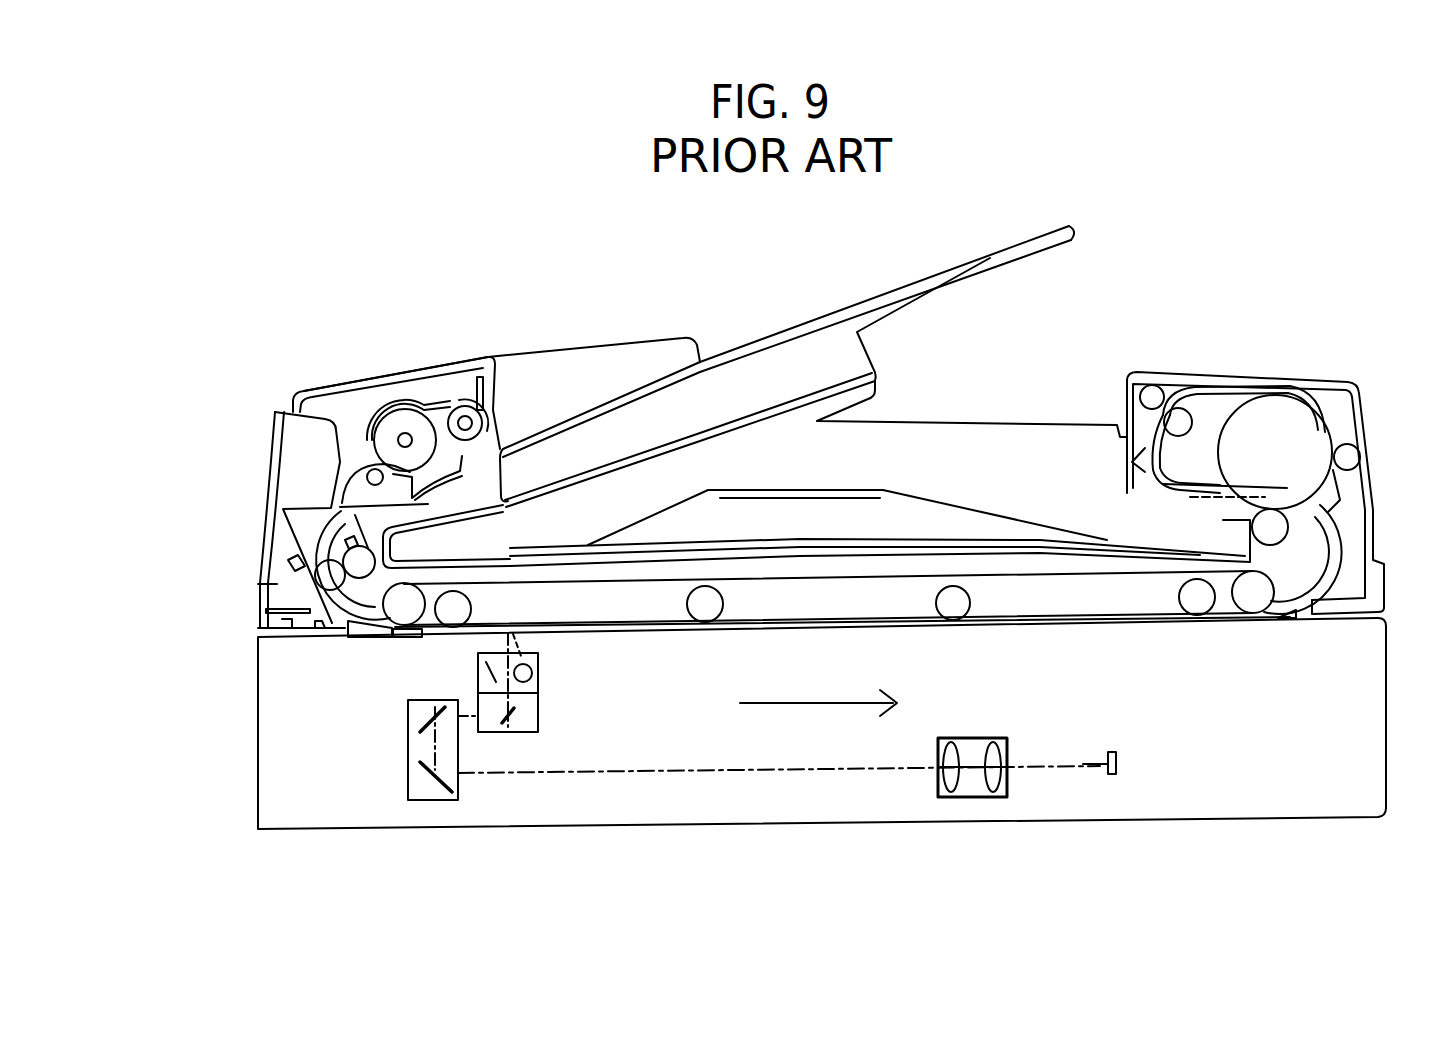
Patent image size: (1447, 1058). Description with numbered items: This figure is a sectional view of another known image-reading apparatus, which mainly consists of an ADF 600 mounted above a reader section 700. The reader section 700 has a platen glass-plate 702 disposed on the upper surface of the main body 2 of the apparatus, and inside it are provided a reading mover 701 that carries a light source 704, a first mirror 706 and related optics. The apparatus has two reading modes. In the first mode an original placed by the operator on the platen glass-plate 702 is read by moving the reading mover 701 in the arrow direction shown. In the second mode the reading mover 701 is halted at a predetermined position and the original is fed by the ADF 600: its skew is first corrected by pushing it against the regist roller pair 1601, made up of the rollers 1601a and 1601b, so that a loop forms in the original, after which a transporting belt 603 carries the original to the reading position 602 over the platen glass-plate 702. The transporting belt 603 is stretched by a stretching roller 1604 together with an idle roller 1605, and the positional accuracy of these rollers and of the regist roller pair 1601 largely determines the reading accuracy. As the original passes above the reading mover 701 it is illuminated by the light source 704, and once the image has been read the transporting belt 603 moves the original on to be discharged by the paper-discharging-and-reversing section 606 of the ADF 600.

The main body 2 is at (845, 767).
The ADF 600 is at (734, 464).
The paper-discharging-and-reversing section 606 is at (1278, 370).
The transporting belt 603 is at (828, 625).
The reading position 602 is at (520, 635).
The light source 704 is at (532, 673).
The reading mover 701 is at (549, 700).
The first mirror 706 is at (510, 722).
The stretching roller 1604 is at (422, 638).
The idle roller 1605 is at (1228, 622).
The platen glass-plate 702 is at (1163, 628).
The reader section 700 is at (1088, 826).
The regist roller pair 1601 is at (205, 605).
The regist roller 1601a is at (264, 583).
The regist roller 1601b is at (260, 610).